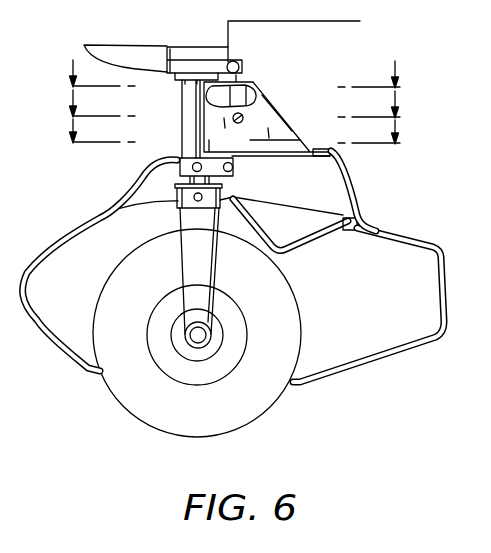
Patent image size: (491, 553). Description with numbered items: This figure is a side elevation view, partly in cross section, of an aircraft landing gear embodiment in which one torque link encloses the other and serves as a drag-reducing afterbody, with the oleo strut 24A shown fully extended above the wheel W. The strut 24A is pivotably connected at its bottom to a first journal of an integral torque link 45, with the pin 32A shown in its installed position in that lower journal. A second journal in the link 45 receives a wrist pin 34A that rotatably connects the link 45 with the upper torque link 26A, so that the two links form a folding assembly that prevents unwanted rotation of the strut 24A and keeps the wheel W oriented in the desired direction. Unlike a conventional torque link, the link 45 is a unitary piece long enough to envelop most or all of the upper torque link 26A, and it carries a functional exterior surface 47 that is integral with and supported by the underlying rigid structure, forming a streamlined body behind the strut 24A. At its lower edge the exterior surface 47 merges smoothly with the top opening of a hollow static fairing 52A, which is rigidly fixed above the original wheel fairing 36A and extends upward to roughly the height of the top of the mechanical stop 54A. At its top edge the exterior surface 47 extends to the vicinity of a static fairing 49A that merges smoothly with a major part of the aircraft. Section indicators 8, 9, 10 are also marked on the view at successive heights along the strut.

The wheel W is at (255, 385).
The static fairing 49A is at (91, 63).
The upper torque link 26A is at (250, 75).
The oleo strut 24A is at (189, 118).
The wrist pin 34A is at (243, 116).
The torque link 45 is at (282, 115).
The exterior surface 47 is at (261, 127).
The mechanical stop 54A is at (196, 156).
The pin 32A is at (263, 155).
The wheel fairing 36A is at (415, 238).
The static fairing 52A is at (358, 189).
The section line 8 is at (232, 75).
The section line 9 is at (232, 105).
The section line 10 is at (236, 132).